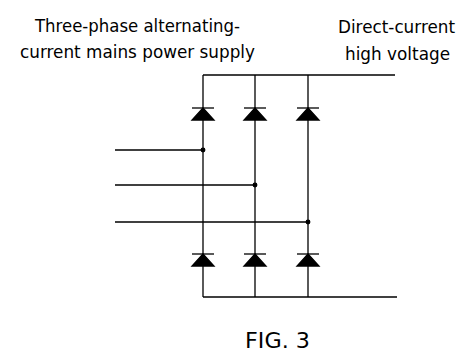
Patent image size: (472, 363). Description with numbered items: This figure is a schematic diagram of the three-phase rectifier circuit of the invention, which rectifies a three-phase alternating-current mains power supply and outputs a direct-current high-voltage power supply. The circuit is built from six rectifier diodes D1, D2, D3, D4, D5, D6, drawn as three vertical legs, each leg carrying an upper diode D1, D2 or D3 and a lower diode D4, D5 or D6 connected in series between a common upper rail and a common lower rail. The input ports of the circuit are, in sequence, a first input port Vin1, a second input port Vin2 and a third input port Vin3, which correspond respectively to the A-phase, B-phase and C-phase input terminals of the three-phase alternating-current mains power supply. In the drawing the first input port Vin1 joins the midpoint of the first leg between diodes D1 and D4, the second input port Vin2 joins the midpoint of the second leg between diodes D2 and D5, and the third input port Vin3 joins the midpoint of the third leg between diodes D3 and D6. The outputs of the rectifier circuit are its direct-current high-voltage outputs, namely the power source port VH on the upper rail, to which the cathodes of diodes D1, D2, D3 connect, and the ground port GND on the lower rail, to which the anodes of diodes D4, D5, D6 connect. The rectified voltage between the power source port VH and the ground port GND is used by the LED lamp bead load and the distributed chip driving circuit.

The rectifier diode D1 is at (214, 103).
The rectifier diode D2 is at (266, 103).
The rectifier diode D3 is at (319, 103).
The rectifier diode D4 is at (214, 248).
The rectifier diode D5 is at (266, 248).
The rectifier diode D6 is at (319, 248).
The first input port Vin1 is at (160, 142).
The second input port Vin2 is at (186, 177).
The third input port Vin3 is at (212, 214).
The power source port VH is at (304, 90).
The ground port GND is at (319, 284).